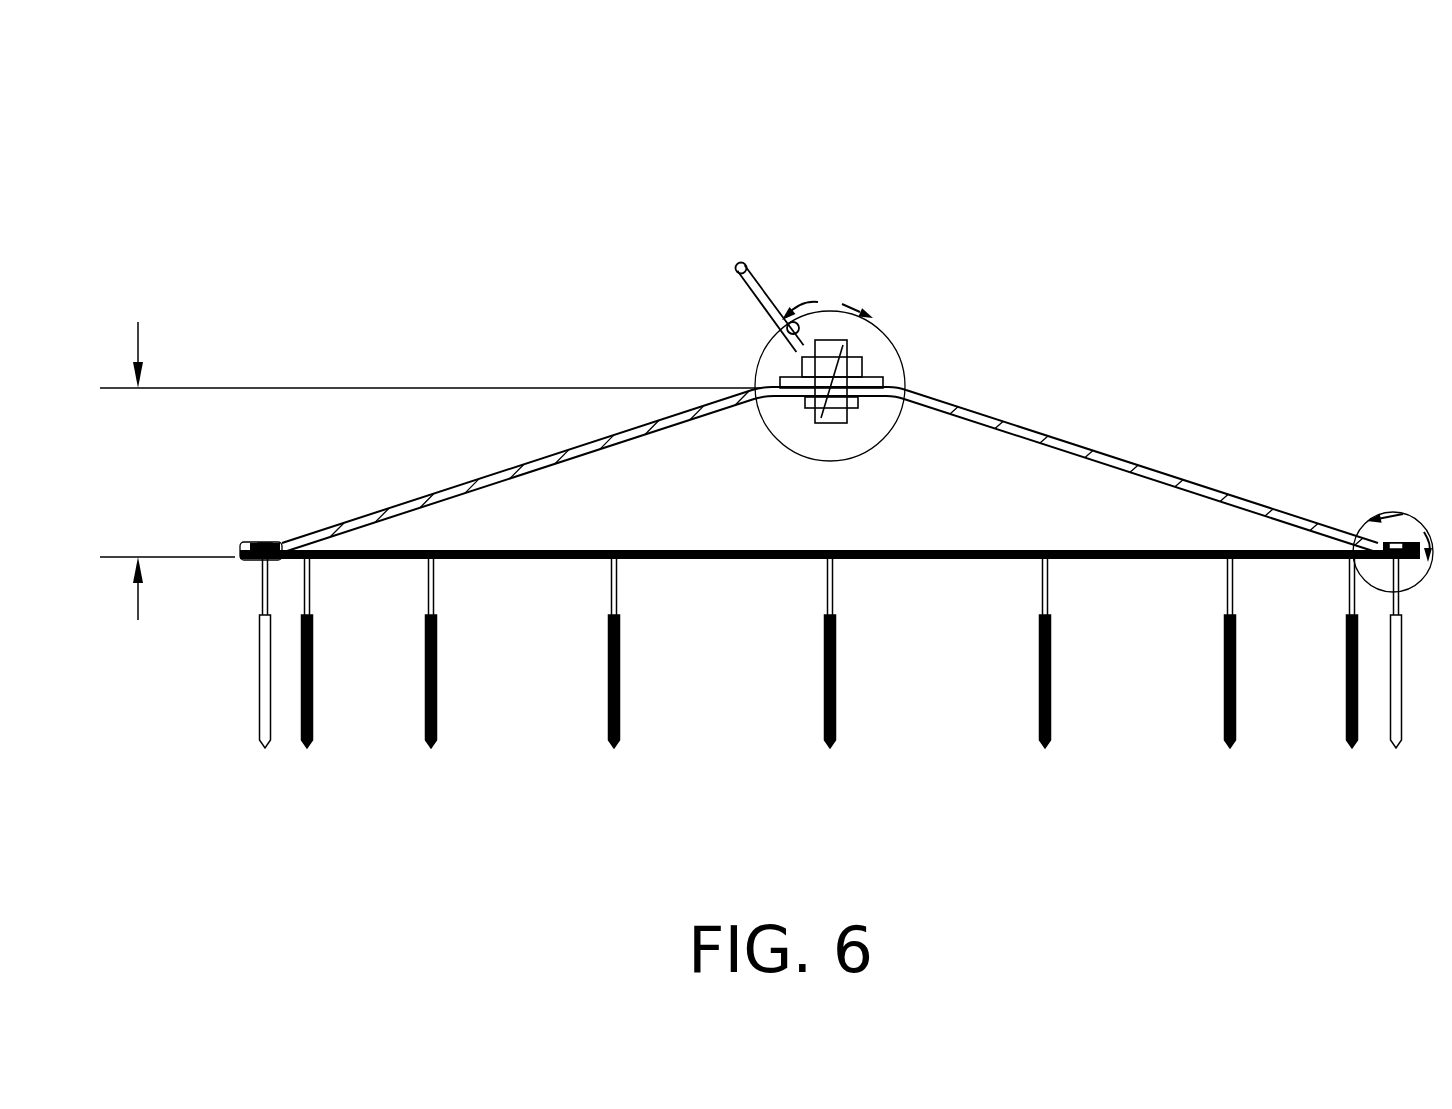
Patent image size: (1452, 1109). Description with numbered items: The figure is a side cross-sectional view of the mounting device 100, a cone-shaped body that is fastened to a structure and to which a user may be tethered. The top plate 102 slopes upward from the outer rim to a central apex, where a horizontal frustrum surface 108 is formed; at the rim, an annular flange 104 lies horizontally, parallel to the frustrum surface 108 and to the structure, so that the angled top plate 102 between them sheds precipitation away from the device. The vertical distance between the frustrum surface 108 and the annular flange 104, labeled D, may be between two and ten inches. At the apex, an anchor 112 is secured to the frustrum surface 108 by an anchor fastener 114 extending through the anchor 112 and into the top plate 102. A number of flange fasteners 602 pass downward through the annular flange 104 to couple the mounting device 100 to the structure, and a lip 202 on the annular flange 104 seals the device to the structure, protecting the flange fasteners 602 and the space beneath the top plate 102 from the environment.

The mounting device 100 is at (160, 106).
The top plate 102 is at (450, 492).
The annular flange 104 is at (1373, 547).
The frustrum surface 108 is at (885, 392).
The anchor 112 is at (765, 298).
The anchor fastener 114 is at (866, 313).
The lip 202 is at (247, 560).
The flange fasteners 602 is at (265, 745).